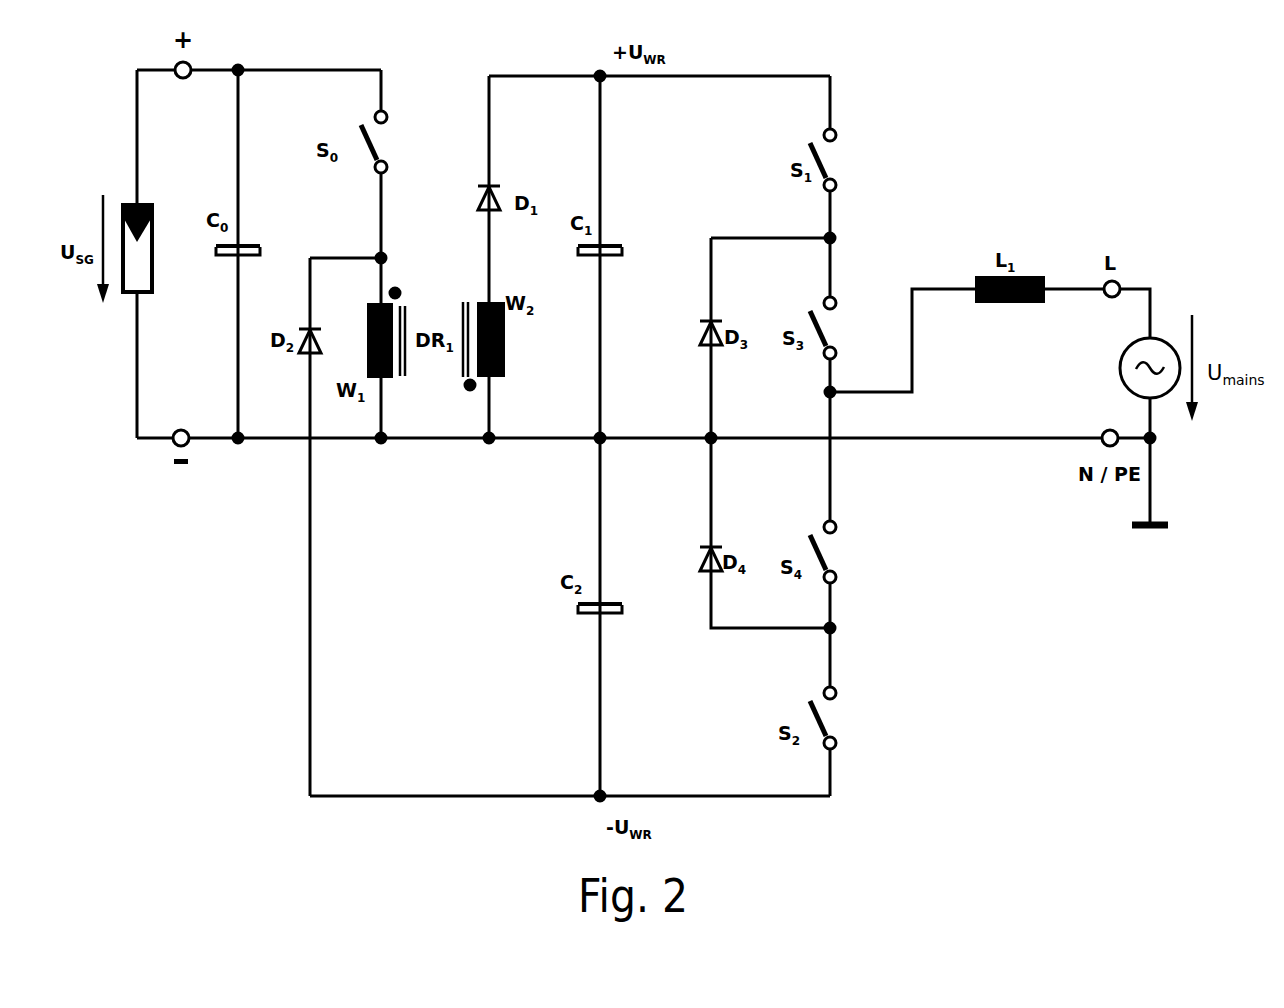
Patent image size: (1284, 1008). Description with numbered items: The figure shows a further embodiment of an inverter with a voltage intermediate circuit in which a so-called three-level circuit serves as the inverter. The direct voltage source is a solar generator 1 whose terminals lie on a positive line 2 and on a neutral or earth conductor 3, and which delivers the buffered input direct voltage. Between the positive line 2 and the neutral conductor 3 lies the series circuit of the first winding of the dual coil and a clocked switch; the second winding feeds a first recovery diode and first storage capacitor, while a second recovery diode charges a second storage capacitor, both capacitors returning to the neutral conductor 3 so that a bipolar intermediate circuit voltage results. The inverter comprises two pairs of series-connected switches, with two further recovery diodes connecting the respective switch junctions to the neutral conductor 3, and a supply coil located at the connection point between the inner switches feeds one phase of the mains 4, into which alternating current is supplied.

The solar generator 1 is at (157, 248).
The positive line 2 is at (252, 64).
The neutral or earth conductor 3 is at (243, 450).
The mains 4 is at (1118, 376).